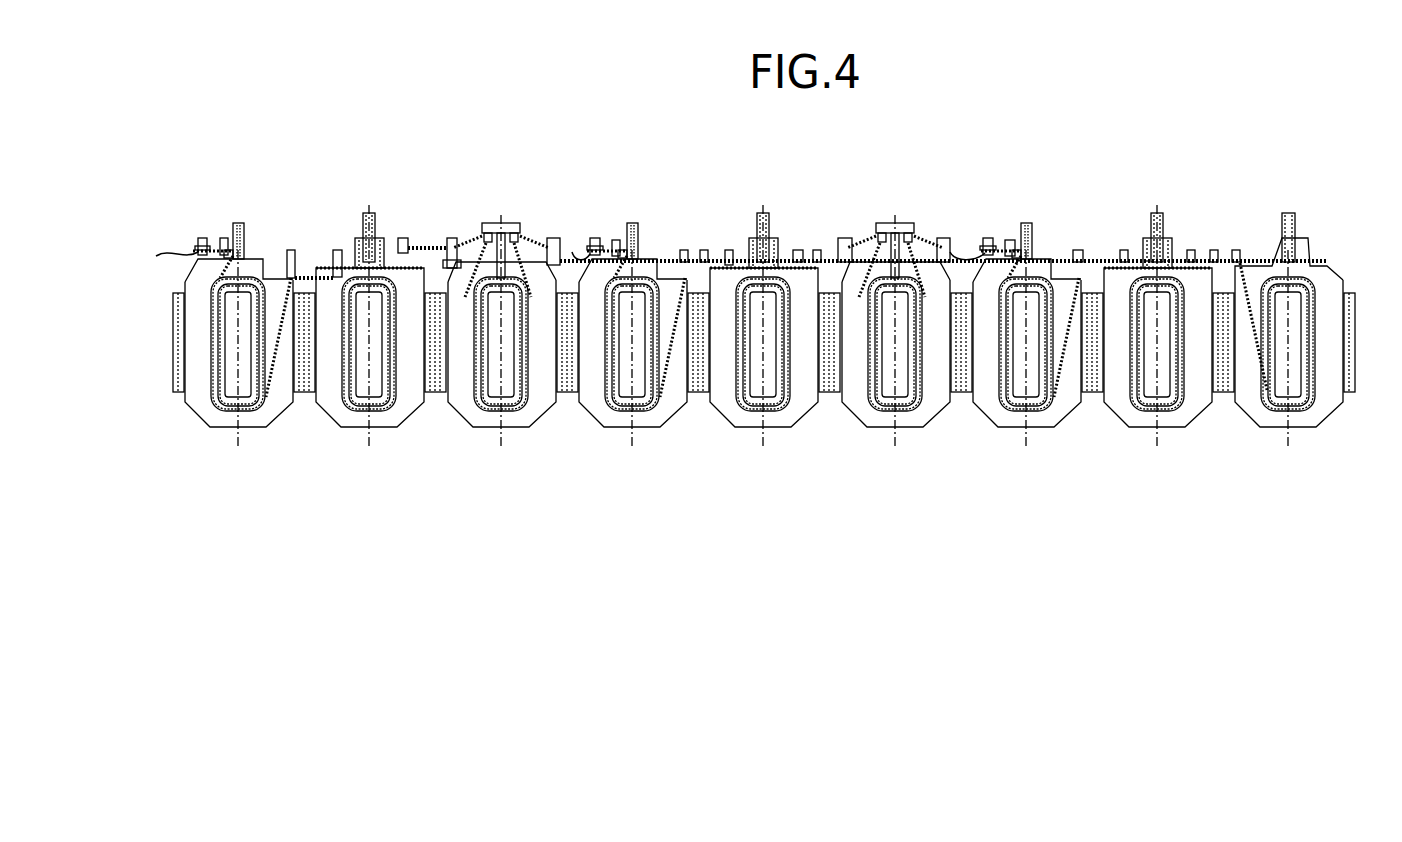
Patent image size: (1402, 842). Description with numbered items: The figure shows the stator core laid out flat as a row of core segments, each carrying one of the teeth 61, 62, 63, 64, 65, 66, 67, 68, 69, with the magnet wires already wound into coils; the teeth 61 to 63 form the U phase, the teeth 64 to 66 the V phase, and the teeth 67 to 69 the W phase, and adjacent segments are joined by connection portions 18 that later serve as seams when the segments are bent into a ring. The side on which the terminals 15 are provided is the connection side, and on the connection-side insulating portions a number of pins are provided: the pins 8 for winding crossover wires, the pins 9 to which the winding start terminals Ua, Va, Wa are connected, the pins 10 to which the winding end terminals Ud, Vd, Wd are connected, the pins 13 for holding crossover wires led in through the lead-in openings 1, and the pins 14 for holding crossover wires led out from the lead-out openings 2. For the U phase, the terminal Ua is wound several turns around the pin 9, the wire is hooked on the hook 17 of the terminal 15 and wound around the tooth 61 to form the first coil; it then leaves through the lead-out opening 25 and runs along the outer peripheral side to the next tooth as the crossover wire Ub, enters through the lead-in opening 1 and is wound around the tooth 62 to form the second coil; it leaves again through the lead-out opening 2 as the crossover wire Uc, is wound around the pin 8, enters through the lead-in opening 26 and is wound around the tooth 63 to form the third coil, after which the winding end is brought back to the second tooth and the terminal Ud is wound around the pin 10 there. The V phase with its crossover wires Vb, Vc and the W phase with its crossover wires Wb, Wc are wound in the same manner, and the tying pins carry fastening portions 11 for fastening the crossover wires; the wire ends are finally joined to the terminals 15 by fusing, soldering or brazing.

The lead-in opening 1 is at (395, 300).
The lead-out opening 2 is at (332, 300).
The pin 8 is at (291, 252).
The pin 9 is at (201, 237).
The pin 10 is at (403, 238).
The fastening portion 11 is at (1235, 255).
The pin 13 is at (337, 265).
The pin 14 is at (798, 255).
The terminal 15 is at (245, 223).
The hook 17 is at (224, 240).
The connection portion 18 is at (958, 393).
The lead-out opening 25 is at (273, 265).
The lead-in opening 26 is at (482, 243).
The tooth 61 is at (244, 380).
The tooth 62 is at (375, 380).
The tooth 63 is at (507, 380).
The tooth 64 is at (638, 380).
The tooth 65 is at (769, 380).
The tooth 66 is at (901, 380).
The tooth 67 is at (1032, 380).
The tooth 68 is at (1163, 380).
The tooth 69 is at (1294, 380).
The winding start terminal Ua is at (161, 254).
The crossover wire Ub is at (311, 265).
The crossover wire Uc is at (432, 258).
The winding end terminal Ud is at (392, 238).
The winding start terminal Va is at (582, 250).
The crossover wire Vb is at (703, 256).
The crossover wire Vc is at (817, 256).
The winding end terminal Vd is at (572, 238).
The winding start terminal Wa is at (998, 238).
The crossover wire Wb is at (1098, 256).
The crossover wire Wc is at (1212, 256).
The winding end terminal Wd is at (937, 238).